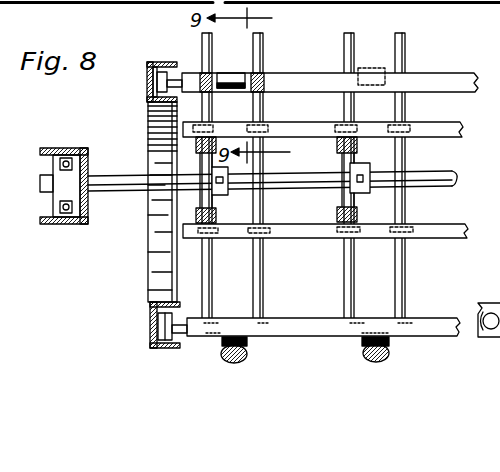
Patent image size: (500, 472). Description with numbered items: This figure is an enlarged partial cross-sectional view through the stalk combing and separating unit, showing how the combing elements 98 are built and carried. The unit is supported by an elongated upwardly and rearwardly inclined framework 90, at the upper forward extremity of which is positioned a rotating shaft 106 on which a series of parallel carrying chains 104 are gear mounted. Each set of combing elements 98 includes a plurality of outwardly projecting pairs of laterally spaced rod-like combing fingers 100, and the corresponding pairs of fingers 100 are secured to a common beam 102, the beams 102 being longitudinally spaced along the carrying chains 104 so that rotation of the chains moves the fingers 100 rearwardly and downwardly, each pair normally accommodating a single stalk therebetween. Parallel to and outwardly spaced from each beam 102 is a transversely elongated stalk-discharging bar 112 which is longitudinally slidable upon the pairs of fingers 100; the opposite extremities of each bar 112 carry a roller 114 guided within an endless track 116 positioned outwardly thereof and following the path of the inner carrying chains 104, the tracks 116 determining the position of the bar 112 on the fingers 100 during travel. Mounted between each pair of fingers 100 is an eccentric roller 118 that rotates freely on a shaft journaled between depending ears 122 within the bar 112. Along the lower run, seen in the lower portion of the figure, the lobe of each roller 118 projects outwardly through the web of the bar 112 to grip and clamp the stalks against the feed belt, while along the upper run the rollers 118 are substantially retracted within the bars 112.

The framework 90 is at (83, 224).
The combing elements 98 is at (413, 53).
The combing fingers 100 is at (248, 50).
The beam 102 is at (424, 133).
The carrying chains 104 is at (355, 196).
The rotating shaft 106 is at (254, 183).
The stalk-discharging bar 112 is at (448, 73).
The roller 114 is at (147, 87).
The endless track 116 is at (160, 62).
The eccentric roller 118 is at (259, 70).
The depending ears 122 is at (270, 72).